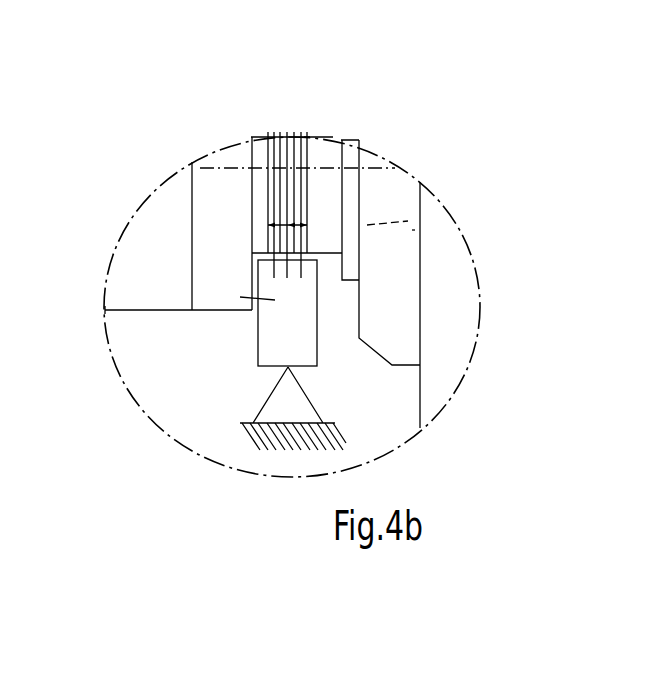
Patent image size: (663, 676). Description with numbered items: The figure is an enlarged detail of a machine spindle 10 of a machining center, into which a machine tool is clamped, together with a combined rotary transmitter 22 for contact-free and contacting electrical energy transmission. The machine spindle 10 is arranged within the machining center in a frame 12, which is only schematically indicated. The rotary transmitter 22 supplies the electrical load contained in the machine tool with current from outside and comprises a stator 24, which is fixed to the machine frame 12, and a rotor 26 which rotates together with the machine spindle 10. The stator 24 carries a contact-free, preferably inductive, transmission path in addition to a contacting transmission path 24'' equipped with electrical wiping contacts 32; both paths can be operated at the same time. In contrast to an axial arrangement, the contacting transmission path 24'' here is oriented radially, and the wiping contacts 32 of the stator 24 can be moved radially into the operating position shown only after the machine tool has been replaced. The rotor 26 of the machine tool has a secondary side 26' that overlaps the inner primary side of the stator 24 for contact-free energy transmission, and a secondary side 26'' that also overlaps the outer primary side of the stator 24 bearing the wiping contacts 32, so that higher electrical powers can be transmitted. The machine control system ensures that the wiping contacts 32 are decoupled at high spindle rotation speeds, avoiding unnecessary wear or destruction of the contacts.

The machine spindle 10 is at (447, 262).
The frame 12 is at (288, 397).
The rotary transmitter 22 is at (224, 320).
The stator 24 is at (267, 321).
The primary side of contacting transmission section 24'' is at (378, 162).
The rotor 26 is at (280, 138).
The secondary side of rotor 26' is at (152, 291).
The secondary side of rotor 26'' is at (358, 219).
The wiping contacts 32 is at (286, 135).